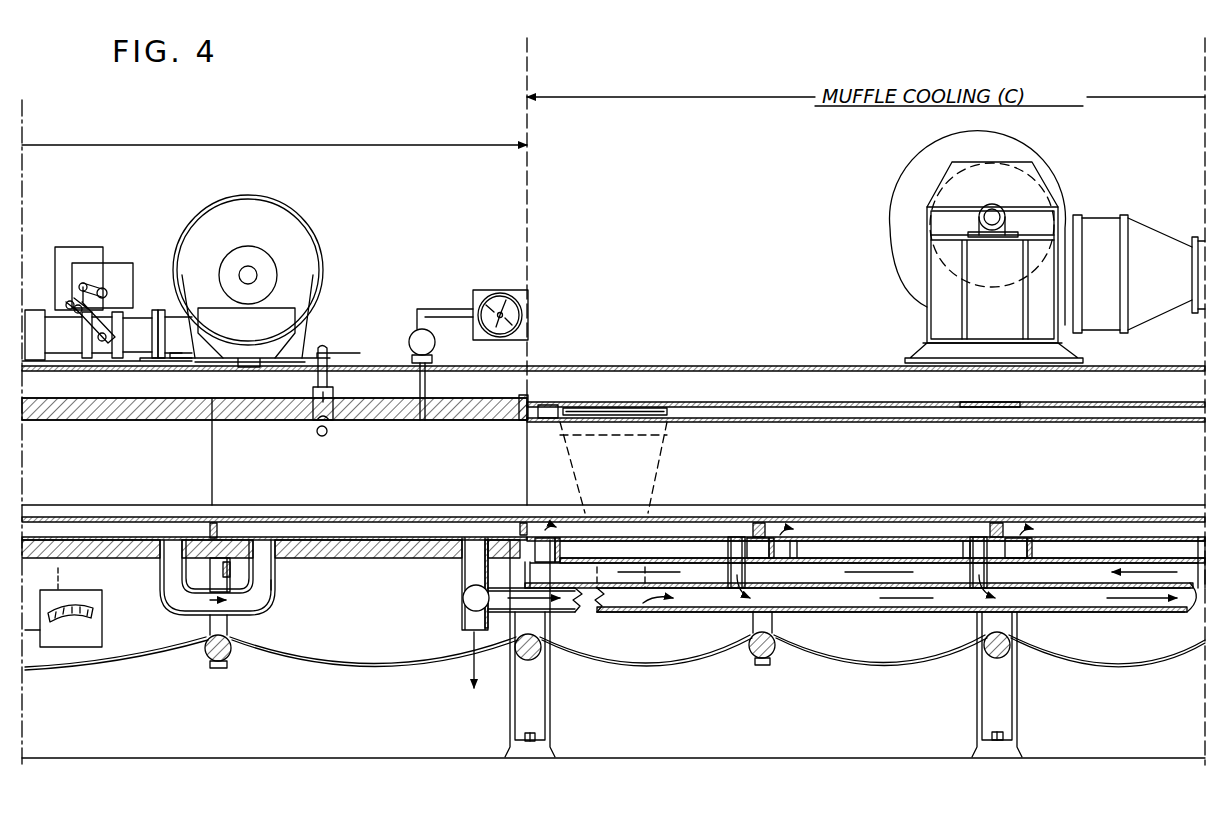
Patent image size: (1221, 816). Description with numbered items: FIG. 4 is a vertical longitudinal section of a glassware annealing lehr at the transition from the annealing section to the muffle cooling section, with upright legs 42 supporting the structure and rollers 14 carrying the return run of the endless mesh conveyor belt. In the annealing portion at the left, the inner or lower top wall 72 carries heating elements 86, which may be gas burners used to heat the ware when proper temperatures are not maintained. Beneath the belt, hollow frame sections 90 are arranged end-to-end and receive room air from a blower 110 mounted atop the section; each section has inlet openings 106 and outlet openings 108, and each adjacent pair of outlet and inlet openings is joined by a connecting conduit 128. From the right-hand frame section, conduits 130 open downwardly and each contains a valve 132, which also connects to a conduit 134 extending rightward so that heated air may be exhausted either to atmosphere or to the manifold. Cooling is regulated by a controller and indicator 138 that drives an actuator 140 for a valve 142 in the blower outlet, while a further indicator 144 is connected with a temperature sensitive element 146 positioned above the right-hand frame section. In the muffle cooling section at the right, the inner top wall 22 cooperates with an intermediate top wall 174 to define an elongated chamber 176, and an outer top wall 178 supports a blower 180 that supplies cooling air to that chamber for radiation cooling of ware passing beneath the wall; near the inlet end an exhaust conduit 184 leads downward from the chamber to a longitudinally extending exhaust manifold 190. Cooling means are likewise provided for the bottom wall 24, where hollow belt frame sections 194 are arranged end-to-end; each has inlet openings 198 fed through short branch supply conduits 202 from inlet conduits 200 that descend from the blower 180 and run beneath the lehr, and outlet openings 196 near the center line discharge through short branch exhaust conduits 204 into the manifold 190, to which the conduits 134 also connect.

The roller 14 is at (205, 657).
The inner top wall 22 is at (792, 425).
The bottom wall 24 is at (885, 517).
The upright leg 42 is at (522, 713).
The inner top wall 72 is at (256, 414).
The heating element 86 is at (319, 419).
The hollow frame section 90 is at (360, 535).
The inlet opening 106 is at (247, 548).
The outlet opening 108 is at (176, 548).
The blower 110 is at (258, 216).
The connecting conduit 128 is at (277, 597).
The conduit 130 is at (470, 573).
The valve 132 is at (462, 600).
The conduit 134 is at (562, 609).
The controller and indicator 138 is at (90, 628).
The actuator 140 is at (108, 278).
The valve 142 is at (100, 342).
The indicator 144 is at (492, 300).
The temperature sensitive element 146 is at (420, 372).
The intermediate top wall 174 is at (790, 405).
The elongated chamber 176 is at (975, 404).
The outer top wall 178 is at (803, 366).
The blower 180 is at (915, 179).
The exhaust conduit 184 is at (632, 411).
The exhaust manifold 190 is at (863, 604).
The hollow belt frame section 194 is at (655, 528).
The outlet opening 196 is at (722, 535).
The inlet opening 198 is at (540, 530).
The inlet conduit 200 is at (818, 558).
The branch supply conduit 202 is at (572, 548).
The branch exhaust conduit 204 is at (725, 573).